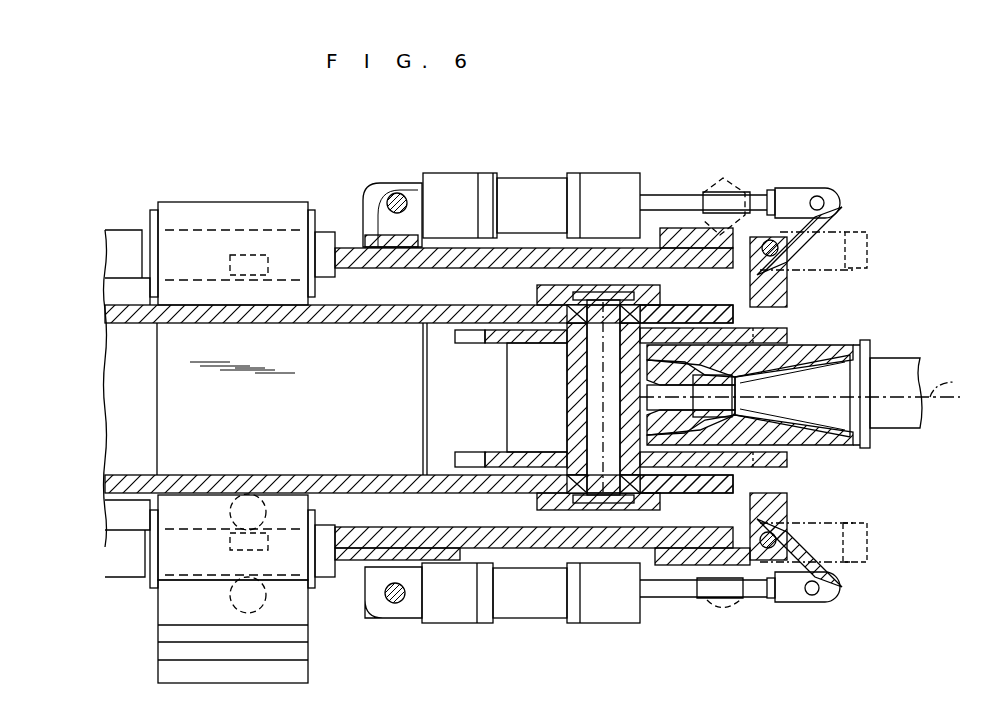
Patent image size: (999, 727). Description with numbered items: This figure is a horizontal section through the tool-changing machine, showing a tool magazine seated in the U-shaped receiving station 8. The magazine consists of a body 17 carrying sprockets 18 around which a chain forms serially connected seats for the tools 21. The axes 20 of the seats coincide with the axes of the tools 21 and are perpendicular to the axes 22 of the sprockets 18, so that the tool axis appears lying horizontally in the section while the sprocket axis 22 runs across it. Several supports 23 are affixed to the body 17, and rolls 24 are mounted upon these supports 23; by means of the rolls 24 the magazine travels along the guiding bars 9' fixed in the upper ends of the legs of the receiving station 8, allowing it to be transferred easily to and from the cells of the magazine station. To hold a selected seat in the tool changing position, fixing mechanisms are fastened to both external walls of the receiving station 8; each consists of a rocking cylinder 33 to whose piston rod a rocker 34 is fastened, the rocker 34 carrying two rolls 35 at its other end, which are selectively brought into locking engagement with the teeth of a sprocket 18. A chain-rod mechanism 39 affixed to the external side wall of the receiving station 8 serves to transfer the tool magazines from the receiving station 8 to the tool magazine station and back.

The receiving station 8 is at (680, 540).
The guiding bars 9' is at (99, 403).
The body 17 is at (133, 480).
The sprockets 18 is at (468, 340).
The axes 20 is at (956, 378).
The tools 21 is at (890, 365).
The axes of the sprockets 22 is at (600, 415).
The supports 23 is at (170, 603).
The rolls 24 is at (245, 255).
The rocking cylinder 33 is at (605, 185).
The rocker 34 is at (828, 605).
The rolls 35 is at (783, 335).
The chain-rod mechanism 39 is at (843, 185).